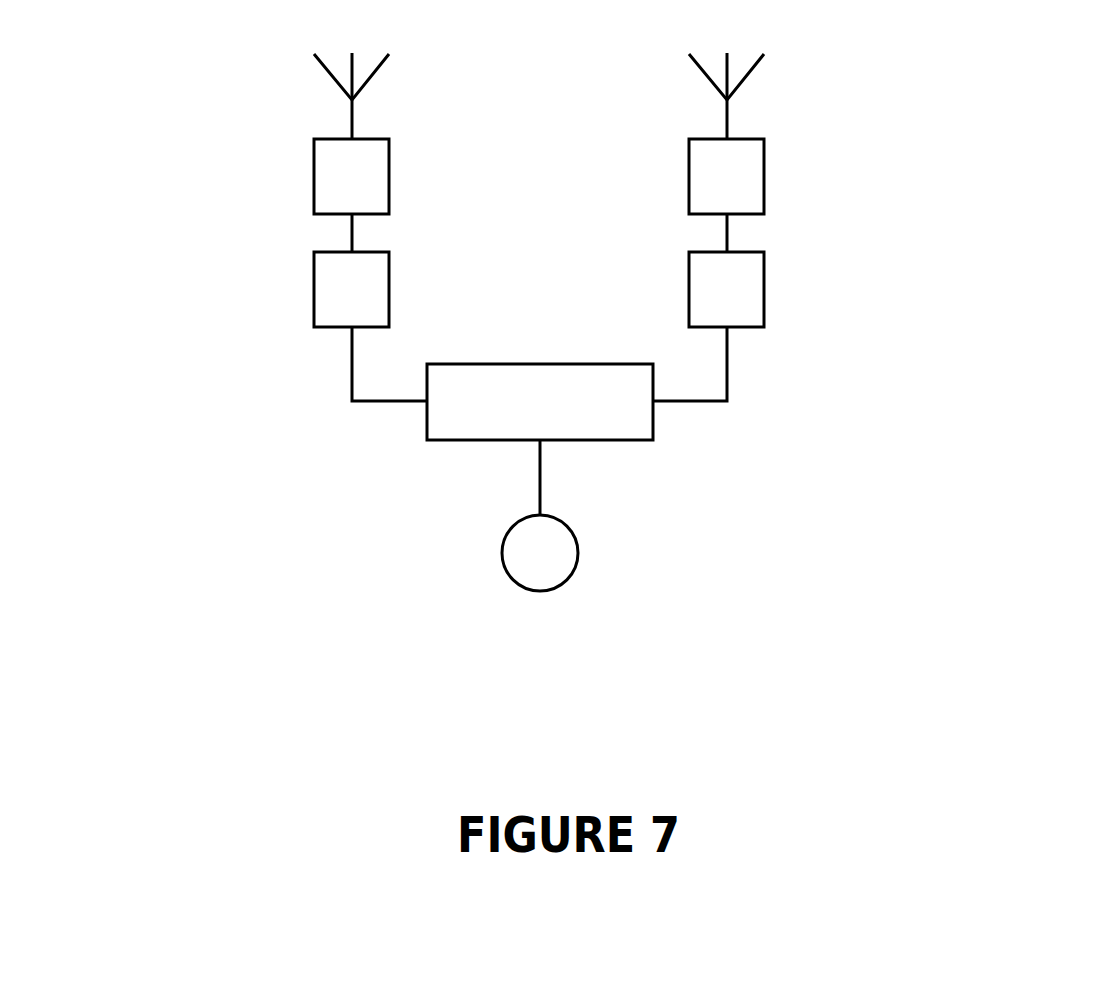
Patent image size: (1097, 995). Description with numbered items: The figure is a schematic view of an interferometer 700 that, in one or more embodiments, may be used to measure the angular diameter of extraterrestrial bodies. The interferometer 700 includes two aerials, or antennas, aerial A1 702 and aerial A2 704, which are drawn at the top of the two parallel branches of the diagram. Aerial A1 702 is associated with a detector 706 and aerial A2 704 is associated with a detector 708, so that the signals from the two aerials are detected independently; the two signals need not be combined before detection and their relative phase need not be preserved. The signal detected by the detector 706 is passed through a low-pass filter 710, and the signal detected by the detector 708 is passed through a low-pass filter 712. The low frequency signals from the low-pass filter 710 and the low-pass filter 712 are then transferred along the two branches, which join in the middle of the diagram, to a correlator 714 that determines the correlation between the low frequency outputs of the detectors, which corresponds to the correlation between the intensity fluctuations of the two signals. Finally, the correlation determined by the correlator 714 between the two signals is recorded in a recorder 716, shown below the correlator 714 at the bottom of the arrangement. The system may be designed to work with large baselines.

The interferometer 700 is at (601, 338).
The aerial A1 702 is at (333, 75).
The aerial A2 704 is at (748, 74).
The detector 706 is at (321, 175).
The detector 708 is at (757, 175).
The low-pass filter 710 is at (321, 288).
The low-pass filter 712 is at (757, 288).
The correlator 714 is at (540, 402).
The recorder 716 is at (567, 551).